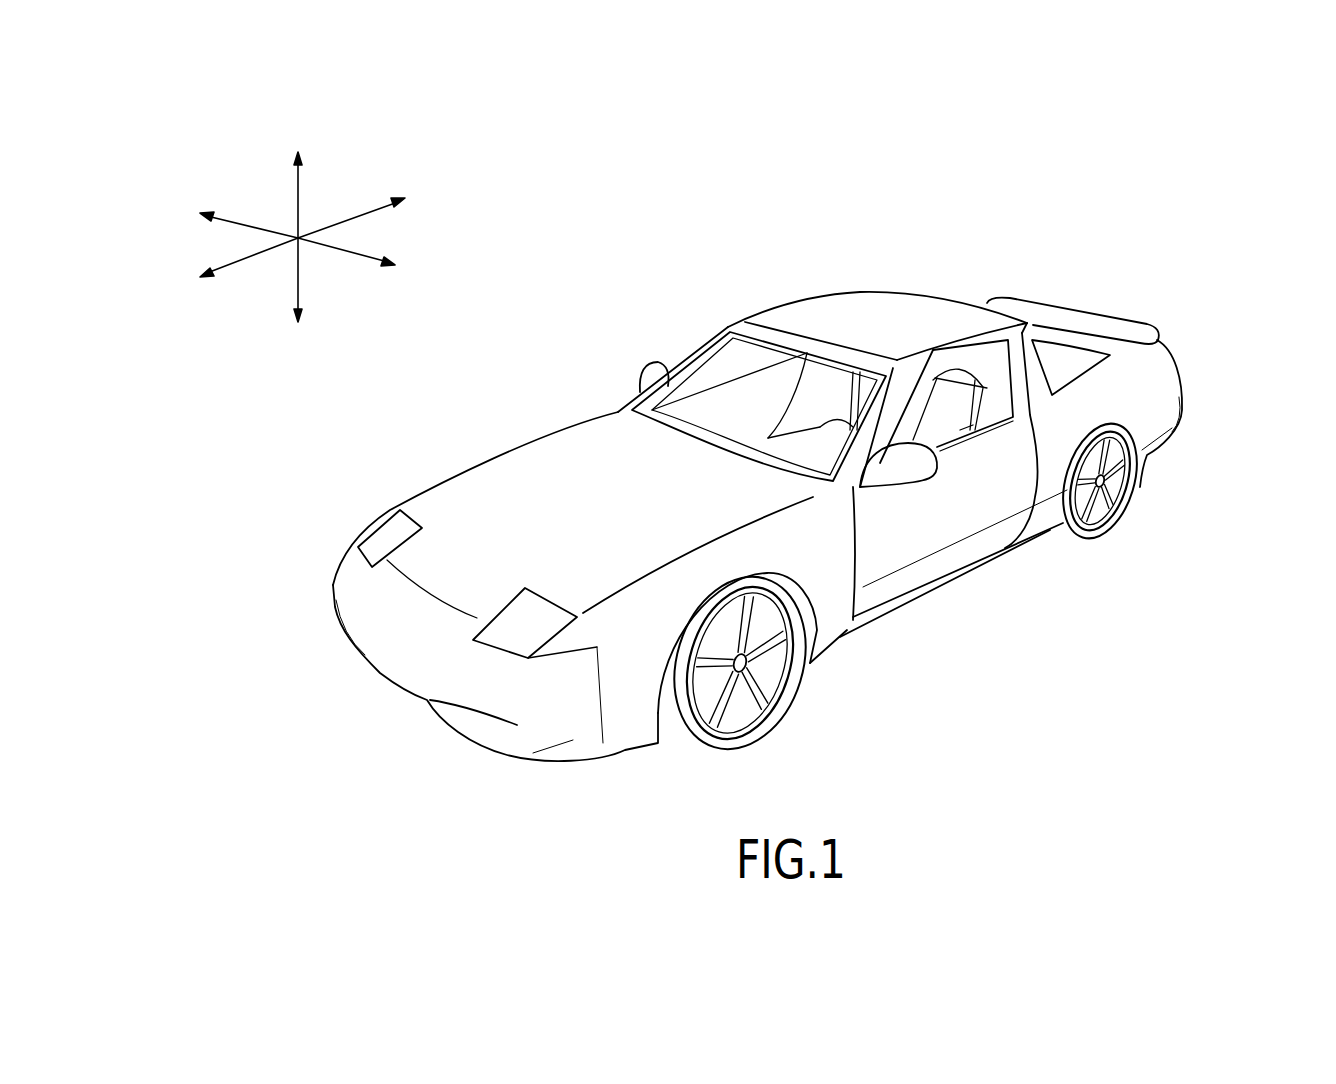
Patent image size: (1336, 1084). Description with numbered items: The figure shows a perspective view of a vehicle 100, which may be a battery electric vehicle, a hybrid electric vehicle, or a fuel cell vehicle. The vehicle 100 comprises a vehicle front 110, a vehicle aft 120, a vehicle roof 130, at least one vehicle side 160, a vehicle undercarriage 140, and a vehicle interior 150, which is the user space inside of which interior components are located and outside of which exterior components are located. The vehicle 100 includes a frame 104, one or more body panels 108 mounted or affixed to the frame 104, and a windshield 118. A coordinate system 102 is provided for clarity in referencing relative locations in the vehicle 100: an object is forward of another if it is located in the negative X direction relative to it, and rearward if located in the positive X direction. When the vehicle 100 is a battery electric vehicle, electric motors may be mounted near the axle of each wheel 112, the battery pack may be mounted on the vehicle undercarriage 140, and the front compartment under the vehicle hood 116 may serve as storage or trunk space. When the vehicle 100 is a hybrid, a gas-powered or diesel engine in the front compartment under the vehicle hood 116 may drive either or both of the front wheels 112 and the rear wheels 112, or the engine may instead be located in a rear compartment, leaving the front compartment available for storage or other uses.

The vehicle 100 is at (705, 220).
The coordinate system 102 is at (298, 238).
The frame 104 is at (953, 577).
The body panels 108 is at (380, 621).
The vehicle front 110 is at (353, 722).
The wheel 112 is at (763, 723).
The vehicle hood 116 is at (497, 478).
The windshield 118 is at (733, 350).
The vehicle aft 120 is at (1163, 323).
The vehicle roof 130 is at (876, 322).
The vehicle undercarriage 140 is at (885, 627).
The vehicle interior 150 is at (723, 397).
The vehicle side 160 is at (970, 517).